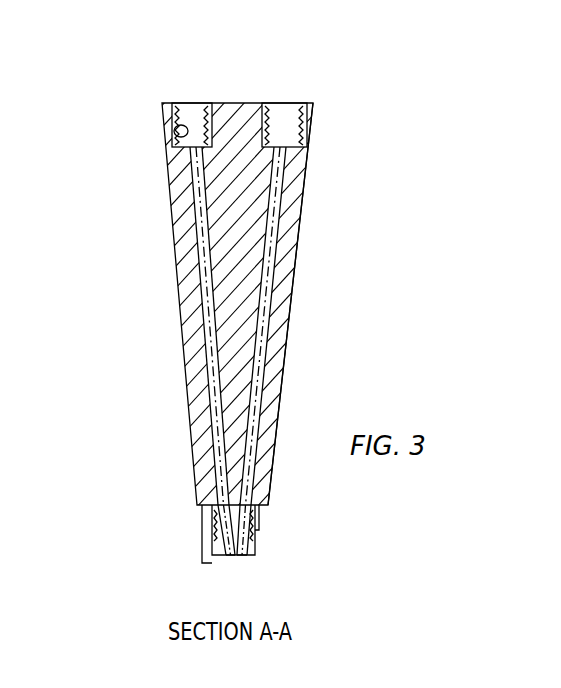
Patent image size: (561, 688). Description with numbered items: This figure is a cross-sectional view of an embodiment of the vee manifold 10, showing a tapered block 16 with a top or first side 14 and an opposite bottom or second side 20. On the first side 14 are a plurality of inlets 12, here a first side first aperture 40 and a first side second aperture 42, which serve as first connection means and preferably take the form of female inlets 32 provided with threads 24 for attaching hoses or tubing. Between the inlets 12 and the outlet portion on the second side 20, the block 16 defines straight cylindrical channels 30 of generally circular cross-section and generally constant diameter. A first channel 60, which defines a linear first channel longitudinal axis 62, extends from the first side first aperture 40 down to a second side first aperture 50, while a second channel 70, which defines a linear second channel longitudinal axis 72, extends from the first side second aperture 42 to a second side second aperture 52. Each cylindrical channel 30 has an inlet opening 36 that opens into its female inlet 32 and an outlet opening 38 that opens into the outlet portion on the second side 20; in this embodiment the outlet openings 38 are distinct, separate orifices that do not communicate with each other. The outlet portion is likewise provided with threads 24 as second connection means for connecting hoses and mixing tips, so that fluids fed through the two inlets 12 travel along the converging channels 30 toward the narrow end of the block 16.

The vee manifold 10 is at (352, 157).
The inlets 12 is at (190, 100).
The first side 14 is at (237, 103).
The block 16 is at (300, 222).
The second side 20 is at (262, 516).
The threads 24 is at (175, 141).
The cylindrical channels 30 is at (234, 530).
The female inlets 32 is at (293, 103).
The inlet opening 36 is at (195, 146).
The outlet opening 38 is at (224, 557).
The first side first aperture 40 is at (182, 66).
The first side second aperture 42 is at (298, 76).
The second side first aperture 50 is at (212, 578).
The second side second aperture 52 is at (258, 562).
The first channel 60 is at (206, 344).
The first channel longitudinal axis 62 is at (197, 236).
The second channel 70 is at (272, 305).
The second channel longitudinal axis 72 is at (274, 270).